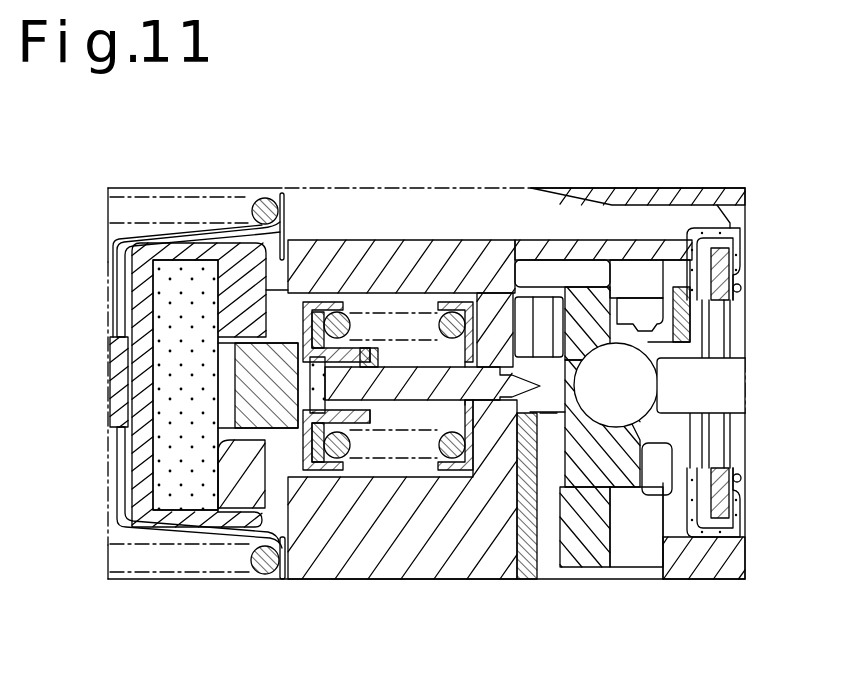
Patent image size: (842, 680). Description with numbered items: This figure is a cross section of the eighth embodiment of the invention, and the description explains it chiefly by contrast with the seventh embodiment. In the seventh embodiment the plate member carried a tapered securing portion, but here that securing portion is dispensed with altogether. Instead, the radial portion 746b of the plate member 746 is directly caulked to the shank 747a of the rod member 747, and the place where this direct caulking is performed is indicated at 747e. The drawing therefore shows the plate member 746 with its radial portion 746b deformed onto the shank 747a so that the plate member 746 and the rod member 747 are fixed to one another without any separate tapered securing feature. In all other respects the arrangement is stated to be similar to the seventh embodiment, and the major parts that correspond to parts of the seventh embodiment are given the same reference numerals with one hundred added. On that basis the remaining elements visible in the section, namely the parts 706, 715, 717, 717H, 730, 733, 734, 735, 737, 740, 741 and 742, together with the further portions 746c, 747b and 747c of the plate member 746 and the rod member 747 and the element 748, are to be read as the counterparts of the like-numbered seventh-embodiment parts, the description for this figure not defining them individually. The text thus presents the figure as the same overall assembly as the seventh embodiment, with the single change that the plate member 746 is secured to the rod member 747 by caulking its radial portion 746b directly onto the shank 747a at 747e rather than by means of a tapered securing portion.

The housing 706 is at (235, 496).
The retaining ring 715 is at (812, 322).
The support member 717 is at (645, 430).
The hole 717H is at (540, 415).
The shaft 730 is at (728, 401).
The rotor holder 733 is at (403, 257).
The yoke tab 734 is at (236, 364).
The magnet 735 is at (170, 465).
The yoke 737 is at (118, 407).
The base 740 is at (403, 460).
The cover plate 741 is at (286, 292).
The bearing holder 742 is at (379, 346).
The plate member 746 is at (471, 297).
The radial portion 746b is at (480, 350).
The sleeve projection 746c is at (453, 297).
The rod member 747 is at (392, 462).
The shank 747a is at (388, 364).
The bearing ball 747b is at (333, 462).
The bearing groove 747c is at (468, 410).
The caulked portion 747e is at (487, 579).
The ball 748 is at (352, 297).